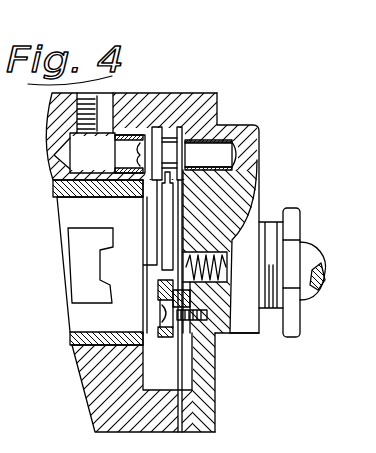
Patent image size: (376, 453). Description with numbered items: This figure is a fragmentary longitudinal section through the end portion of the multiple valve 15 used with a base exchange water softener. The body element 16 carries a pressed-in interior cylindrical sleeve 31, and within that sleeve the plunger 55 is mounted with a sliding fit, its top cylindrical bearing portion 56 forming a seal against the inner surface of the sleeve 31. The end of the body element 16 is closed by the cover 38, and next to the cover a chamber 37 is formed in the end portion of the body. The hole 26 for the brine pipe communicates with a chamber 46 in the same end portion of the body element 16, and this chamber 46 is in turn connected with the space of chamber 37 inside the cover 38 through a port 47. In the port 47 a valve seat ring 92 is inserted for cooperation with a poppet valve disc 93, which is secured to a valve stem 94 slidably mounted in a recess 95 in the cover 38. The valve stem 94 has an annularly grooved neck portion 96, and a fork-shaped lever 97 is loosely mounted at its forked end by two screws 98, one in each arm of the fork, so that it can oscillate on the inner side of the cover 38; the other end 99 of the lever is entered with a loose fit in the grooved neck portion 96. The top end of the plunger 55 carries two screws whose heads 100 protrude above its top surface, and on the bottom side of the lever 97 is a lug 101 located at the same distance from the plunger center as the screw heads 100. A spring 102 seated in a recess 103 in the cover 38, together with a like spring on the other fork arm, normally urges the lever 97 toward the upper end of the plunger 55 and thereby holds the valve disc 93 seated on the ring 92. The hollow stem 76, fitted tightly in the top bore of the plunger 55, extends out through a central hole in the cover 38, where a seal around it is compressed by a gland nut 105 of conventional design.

The multiple valve 15 is at (224, 420).
The body element 16 is at (88, 362).
The hole 26 is at (101, 98).
The interior cylindrical sleeve 31 is at (62, 190).
The chamber 37 is at (169, 366).
The cover 38 is at (208, 388).
The chamber 46 is at (60, 153).
The port 47 is at (125, 155).
The plunger 55 is at (86, 293).
The top cylindrical bearing portion 56 is at (123, 328).
The hollow stem 76 is at (304, 246).
The valve seat ring 92 is at (133, 128).
The poppet valve disc 93 is at (181, 127).
The valve stem 94 is at (218, 148).
The recess 95 is at (203, 142).
The annularly grooved neck portion 96 is at (170, 156).
The fork-shaped lever 97 is at (165, 212).
The screws 98 is at (217, 337).
The end of lever 99 is at (165, 190).
The screw heads 100 is at (146, 333).
The lug 101 is at (157, 213).
The spring 102 is at (202, 267).
The recess 103 is at (226, 288).
The gland nut 105 is at (292, 314).